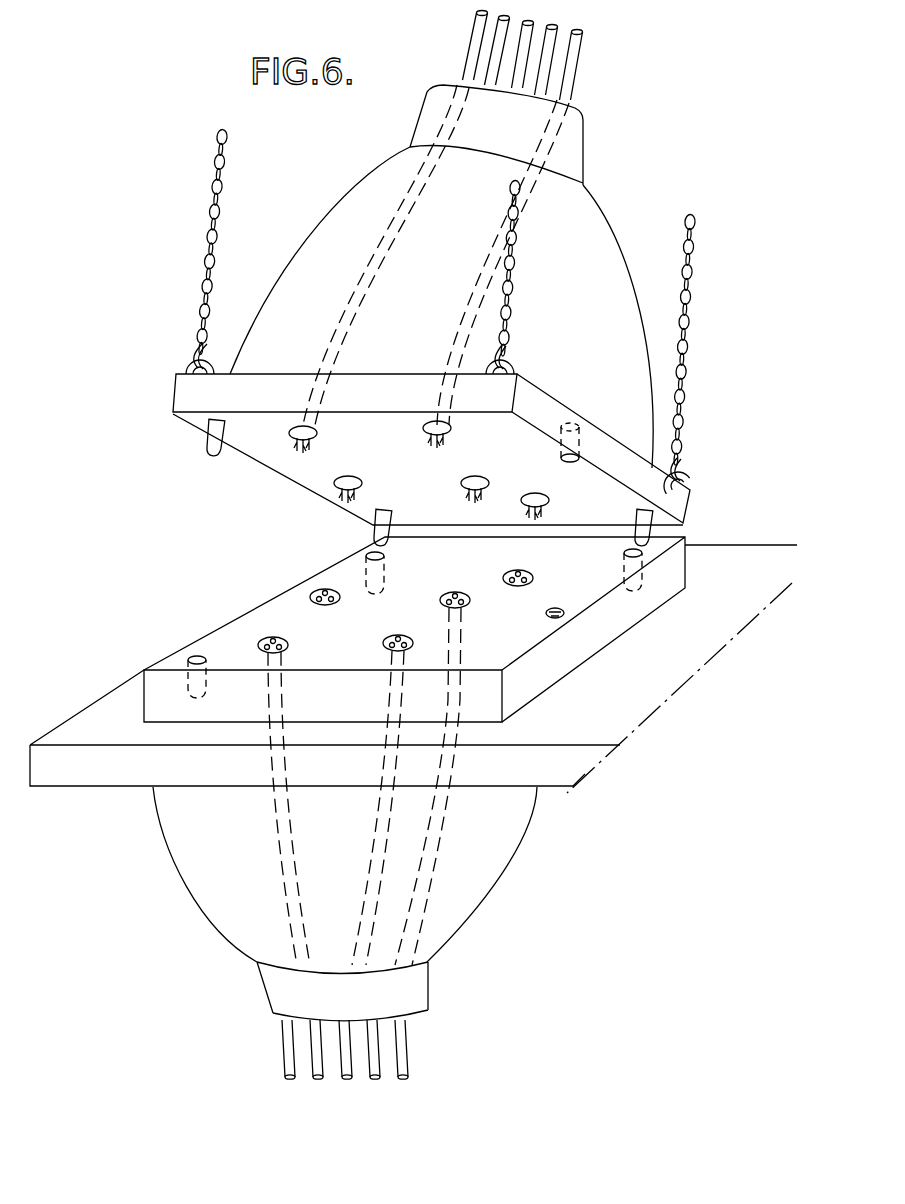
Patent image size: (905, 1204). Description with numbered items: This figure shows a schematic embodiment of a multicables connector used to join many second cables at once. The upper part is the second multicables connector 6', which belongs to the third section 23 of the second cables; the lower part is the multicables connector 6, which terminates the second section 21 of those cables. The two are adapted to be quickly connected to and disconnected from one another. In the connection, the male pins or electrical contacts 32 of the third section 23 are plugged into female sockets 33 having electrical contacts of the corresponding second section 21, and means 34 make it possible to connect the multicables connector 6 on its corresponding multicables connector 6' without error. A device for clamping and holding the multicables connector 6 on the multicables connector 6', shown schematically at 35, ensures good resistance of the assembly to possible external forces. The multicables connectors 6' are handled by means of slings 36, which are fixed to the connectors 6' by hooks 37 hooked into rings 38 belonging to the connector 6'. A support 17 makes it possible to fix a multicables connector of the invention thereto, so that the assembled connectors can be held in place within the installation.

The multicables connector 6 is at (342, 814).
The second multicables connector 6' is at (441, 276).
The support 17 is at (95, 720).
The second section 21 is at (290, 1047).
The third section 23 is at (570, 66).
The contact holes with spring contacts 32 is at (335, 483).
The female sockets 33 is at (268, 638).
The means for connecting without error 34 is at (213, 437).
The clamping and holding device 35 is at (560, 615).
The slings 36 is at (205, 257).
The hooks 37 is at (195, 352).
The rings 38 is at (210, 368).